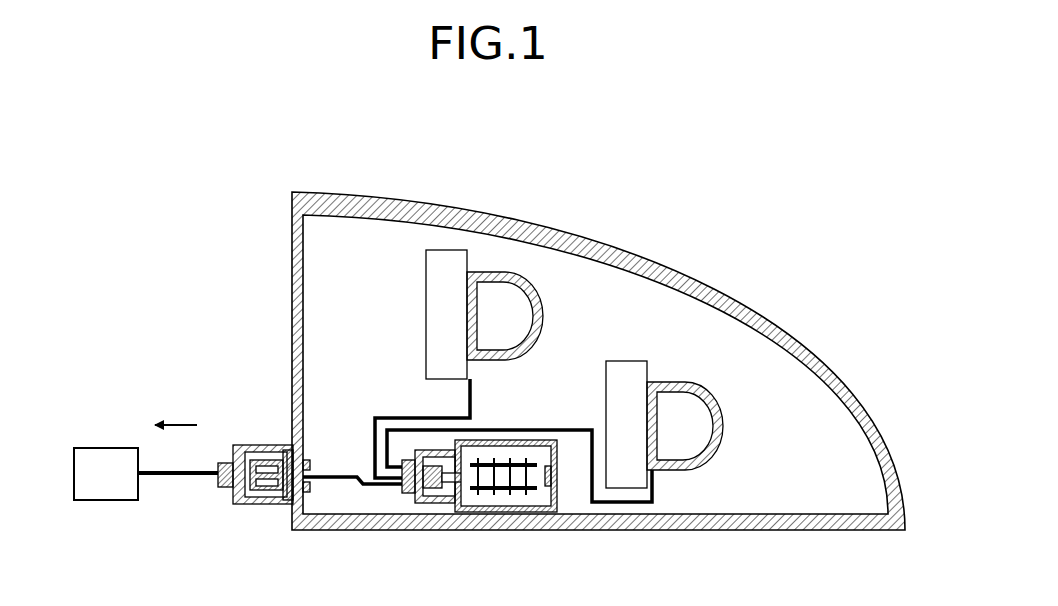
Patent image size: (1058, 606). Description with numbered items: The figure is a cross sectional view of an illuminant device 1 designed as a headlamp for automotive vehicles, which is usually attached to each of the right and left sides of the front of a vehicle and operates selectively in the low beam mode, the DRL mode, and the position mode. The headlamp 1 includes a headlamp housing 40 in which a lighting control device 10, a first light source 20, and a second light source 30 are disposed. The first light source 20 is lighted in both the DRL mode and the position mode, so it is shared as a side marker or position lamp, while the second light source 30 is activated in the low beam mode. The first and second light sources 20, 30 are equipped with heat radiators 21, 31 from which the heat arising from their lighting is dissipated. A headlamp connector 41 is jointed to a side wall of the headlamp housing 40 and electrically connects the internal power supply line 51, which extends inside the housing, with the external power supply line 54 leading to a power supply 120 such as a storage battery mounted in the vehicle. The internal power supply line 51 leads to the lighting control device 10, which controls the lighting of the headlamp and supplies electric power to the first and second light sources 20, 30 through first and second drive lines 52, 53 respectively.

The illuminant device 1 is at (604, 168).
The lighting control device 10 is at (439, 514).
The first light source 20 is at (545, 311).
The heat radiator 21 is at (425, 265).
The second light source 30 is at (724, 423).
The heat radiator 31 is at (605, 367).
The headlamp housing 40 is at (365, 191).
The headlamp connector 41 is at (250, 505).
The internal power supply line 51 is at (333, 470).
The first drive line 52 is at (390, 415).
The second drive line 53 is at (655, 490).
The external power supply line 54 is at (169, 478).
The power supply 120 is at (100, 503).